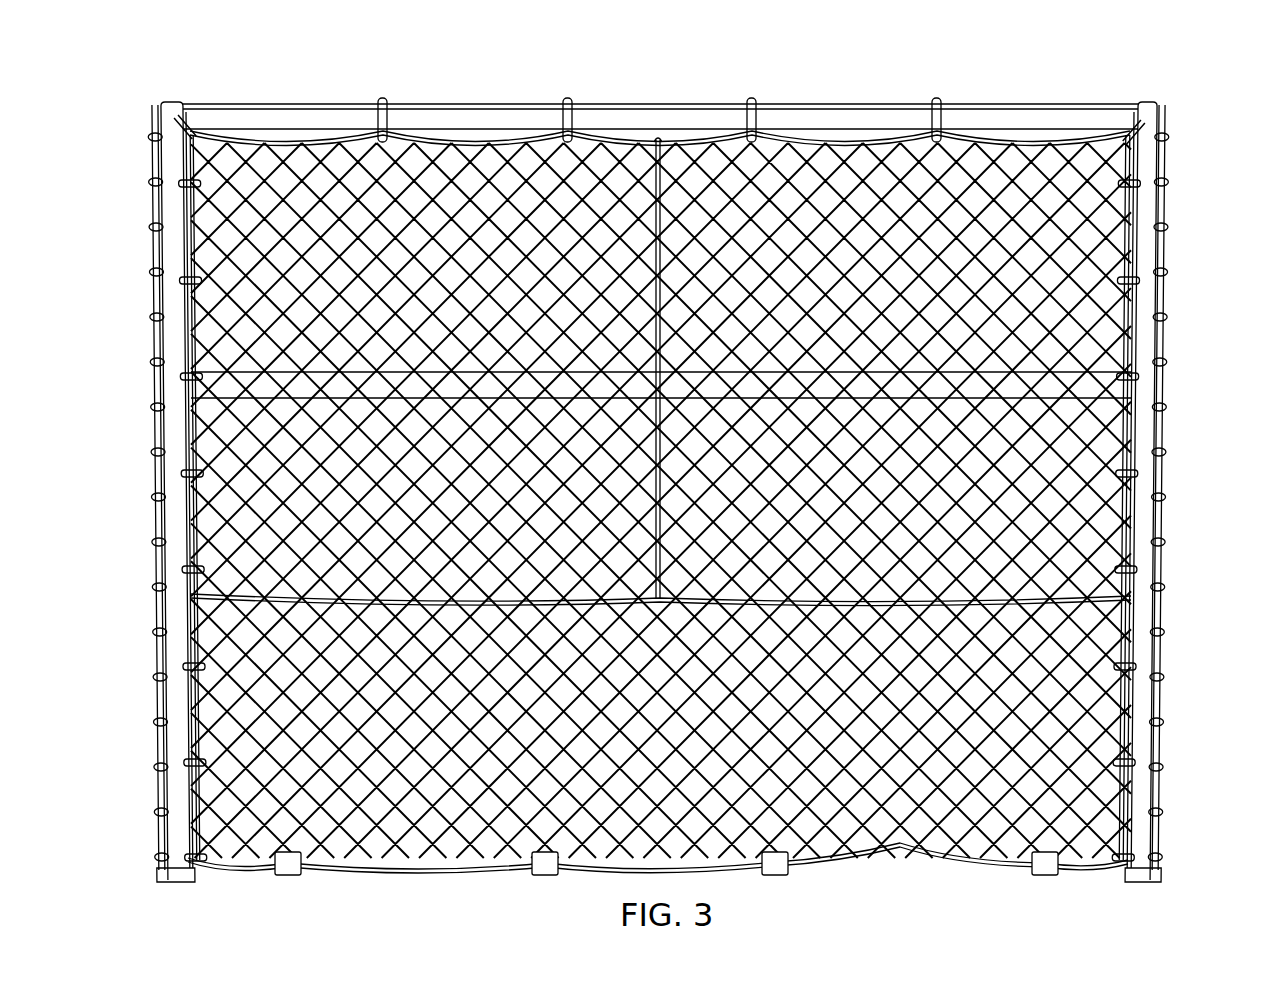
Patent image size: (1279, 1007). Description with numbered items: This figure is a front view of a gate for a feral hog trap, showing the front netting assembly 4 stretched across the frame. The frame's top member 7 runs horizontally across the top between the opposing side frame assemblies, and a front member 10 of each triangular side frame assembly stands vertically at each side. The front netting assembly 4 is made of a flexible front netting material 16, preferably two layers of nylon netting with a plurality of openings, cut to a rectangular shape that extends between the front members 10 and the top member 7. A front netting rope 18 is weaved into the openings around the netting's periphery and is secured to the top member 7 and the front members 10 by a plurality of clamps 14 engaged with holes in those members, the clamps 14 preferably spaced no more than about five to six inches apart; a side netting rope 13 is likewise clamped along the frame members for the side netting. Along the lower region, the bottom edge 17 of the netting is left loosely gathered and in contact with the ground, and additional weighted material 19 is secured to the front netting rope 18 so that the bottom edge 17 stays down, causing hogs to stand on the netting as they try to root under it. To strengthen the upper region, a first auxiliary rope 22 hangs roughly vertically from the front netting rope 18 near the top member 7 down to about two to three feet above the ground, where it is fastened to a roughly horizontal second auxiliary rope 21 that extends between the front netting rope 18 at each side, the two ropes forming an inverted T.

The front netting assembly 4 is at (1075, 457).
The top member 7 is at (830, 126).
The front member 10 is at (1143, 167).
The side netting rope 13 is at (1167, 252).
The clamp 14 is at (1168, 318).
The front netting material 16 is at (1102, 670).
The bottom edge 17 is at (918, 864).
The front netting rope 18 is at (1005, 866).
The weighted material 19 is at (788, 874).
The second auxiliary rope 21 is at (1108, 548).
The first auxiliary rope 22 is at (645, 167).